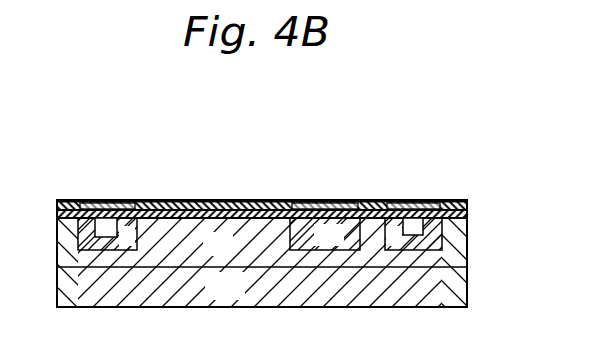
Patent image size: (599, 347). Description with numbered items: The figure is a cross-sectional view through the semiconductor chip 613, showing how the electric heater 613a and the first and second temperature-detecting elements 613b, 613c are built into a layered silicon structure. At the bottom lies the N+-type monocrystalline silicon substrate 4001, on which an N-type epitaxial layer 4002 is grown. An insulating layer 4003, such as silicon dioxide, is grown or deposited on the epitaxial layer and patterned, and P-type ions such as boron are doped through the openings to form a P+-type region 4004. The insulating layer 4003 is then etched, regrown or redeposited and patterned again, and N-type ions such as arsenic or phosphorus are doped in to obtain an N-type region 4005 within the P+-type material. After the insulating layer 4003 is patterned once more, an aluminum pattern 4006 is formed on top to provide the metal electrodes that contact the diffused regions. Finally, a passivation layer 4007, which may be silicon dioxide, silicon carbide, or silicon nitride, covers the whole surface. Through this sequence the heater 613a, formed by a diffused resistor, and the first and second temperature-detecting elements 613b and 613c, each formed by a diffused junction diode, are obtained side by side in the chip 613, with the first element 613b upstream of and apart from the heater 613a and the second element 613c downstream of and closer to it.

The semiconductor chip 613 is at (497, 123).
The electric heater 613a is at (354, 173).
The first temperature-detecting element 613b is at (100, 194).
The second temperature-detecting element 613c is at (438, 148).
The N+-type monocrystalline silicon substrate 4001 is at (468, 297).
The N-type epitaxial layer 4002 is at (468, 262).
The insulating layer 4003 is at (470, 215).
The P+-type region 4004 is at (277, 200).
The N-type region 4005 is at (400, 200).
The aluminum pattern 4006 is at (313, 203).
The passivation layer 4007 is at (468, 204).